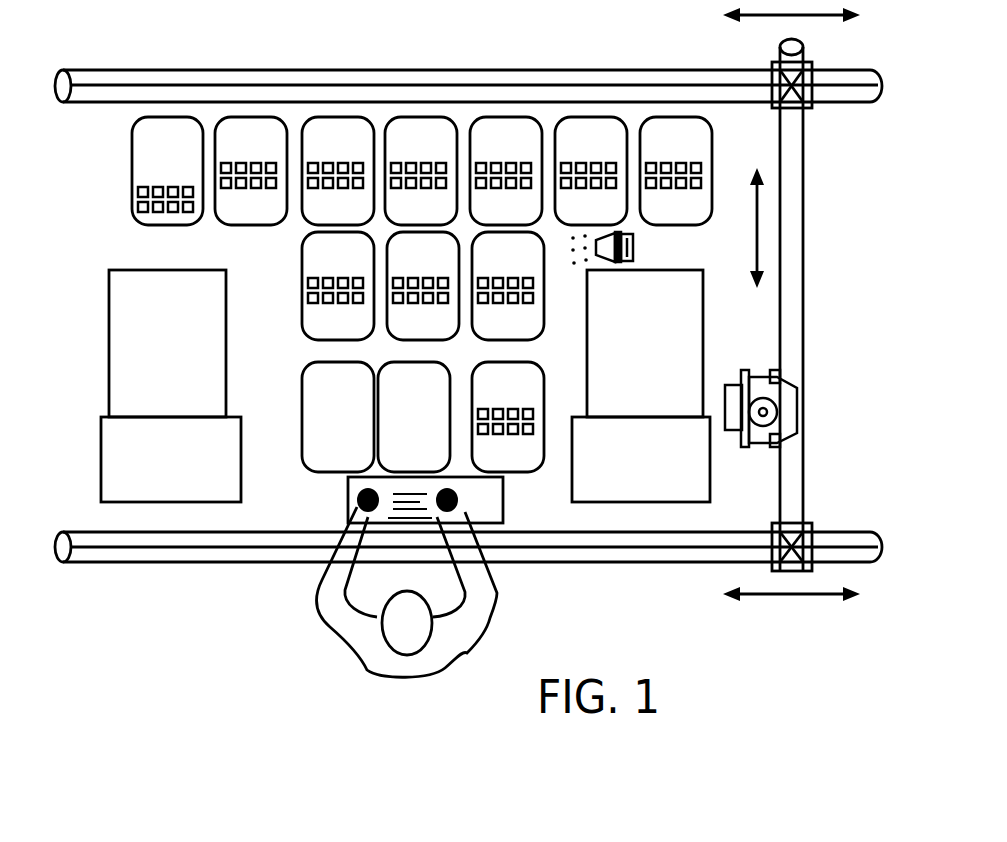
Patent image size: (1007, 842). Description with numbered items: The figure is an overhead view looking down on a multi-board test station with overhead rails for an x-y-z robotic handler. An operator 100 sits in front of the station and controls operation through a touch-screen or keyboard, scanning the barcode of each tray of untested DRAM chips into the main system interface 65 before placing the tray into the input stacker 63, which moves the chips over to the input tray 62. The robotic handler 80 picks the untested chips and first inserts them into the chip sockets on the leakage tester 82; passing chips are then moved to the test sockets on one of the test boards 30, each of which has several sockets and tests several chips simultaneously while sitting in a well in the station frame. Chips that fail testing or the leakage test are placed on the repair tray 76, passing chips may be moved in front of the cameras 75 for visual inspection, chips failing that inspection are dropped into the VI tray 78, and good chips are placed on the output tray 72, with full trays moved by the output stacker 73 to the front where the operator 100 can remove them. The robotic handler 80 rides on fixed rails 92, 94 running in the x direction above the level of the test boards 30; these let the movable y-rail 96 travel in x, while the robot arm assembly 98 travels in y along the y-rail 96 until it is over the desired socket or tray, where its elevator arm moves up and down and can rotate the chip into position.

The test board 30 is at (254, 211).
The input tray 62 is at (186, 366).
The input stacker 63 is at (209, 451).
The main system interface 65 is at (494, 514).
The output tray 72 is at (664, 361).
The output stacker 73 is at (679, 444).
The cameras 75 is at (634, 257).
The repair tray 76 is at (332, 459).
The VI tray 78 is at (409, 459).
The robotic handler 80 is at (808, 418).
The leakage tester 82 is at (132, 176).
The rail 92 is at (175, 562).
The rail 94 is at (430, 70).
The movable y-rail 96 is at (795, 260).
The robot arm assembly 98 is at (760, 378).
The operator 100 is at (334, 612).